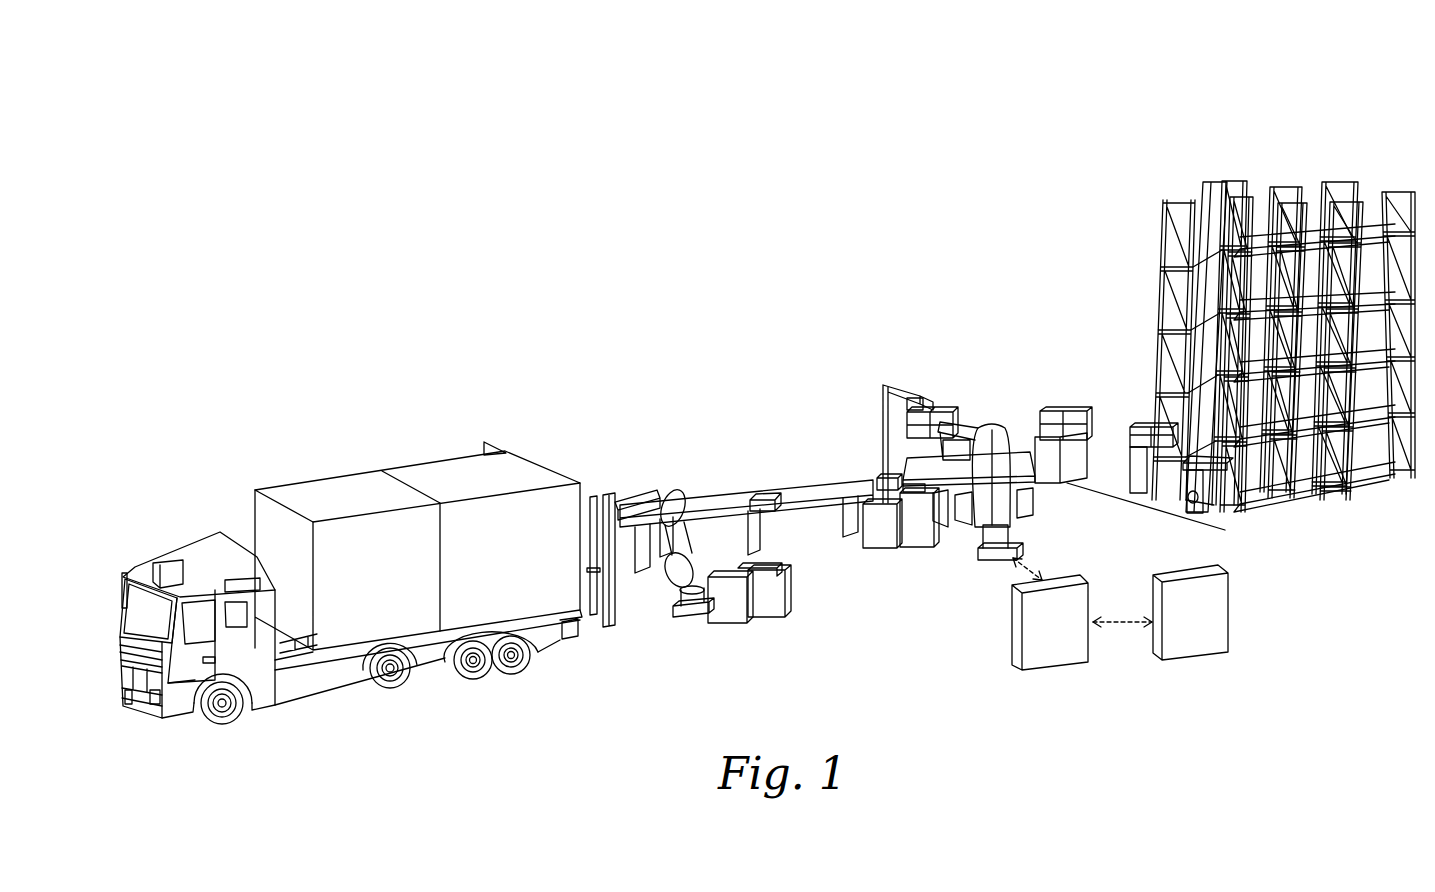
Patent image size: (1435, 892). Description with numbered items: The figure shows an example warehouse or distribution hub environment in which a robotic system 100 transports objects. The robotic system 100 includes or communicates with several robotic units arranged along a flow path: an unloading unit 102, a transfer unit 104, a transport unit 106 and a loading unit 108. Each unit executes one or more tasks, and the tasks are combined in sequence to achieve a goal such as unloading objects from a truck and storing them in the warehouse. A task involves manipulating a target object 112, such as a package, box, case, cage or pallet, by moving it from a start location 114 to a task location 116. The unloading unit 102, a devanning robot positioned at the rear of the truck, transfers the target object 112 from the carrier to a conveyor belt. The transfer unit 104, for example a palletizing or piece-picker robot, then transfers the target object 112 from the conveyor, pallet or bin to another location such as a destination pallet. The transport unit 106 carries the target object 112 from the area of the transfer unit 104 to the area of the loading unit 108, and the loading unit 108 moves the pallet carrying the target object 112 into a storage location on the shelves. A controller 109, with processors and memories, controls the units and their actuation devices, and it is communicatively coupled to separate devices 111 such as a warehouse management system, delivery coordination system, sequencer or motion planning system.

The robotic system 100 is at (872, 118).
The unloading unit 102 is at (658, 486).
The transfer unit 104 is at (943, 344).
The transport unit 106 is at (1042, 425).
The loading unit 108 is at (1185, 502).
The controller 109 is at (1075, 642).
The devices 111 is at (1215, 632).
The target object 112 is at (930, 443).
The start location 114 is at (917, 480).
The task location 116 is at (947, 493).